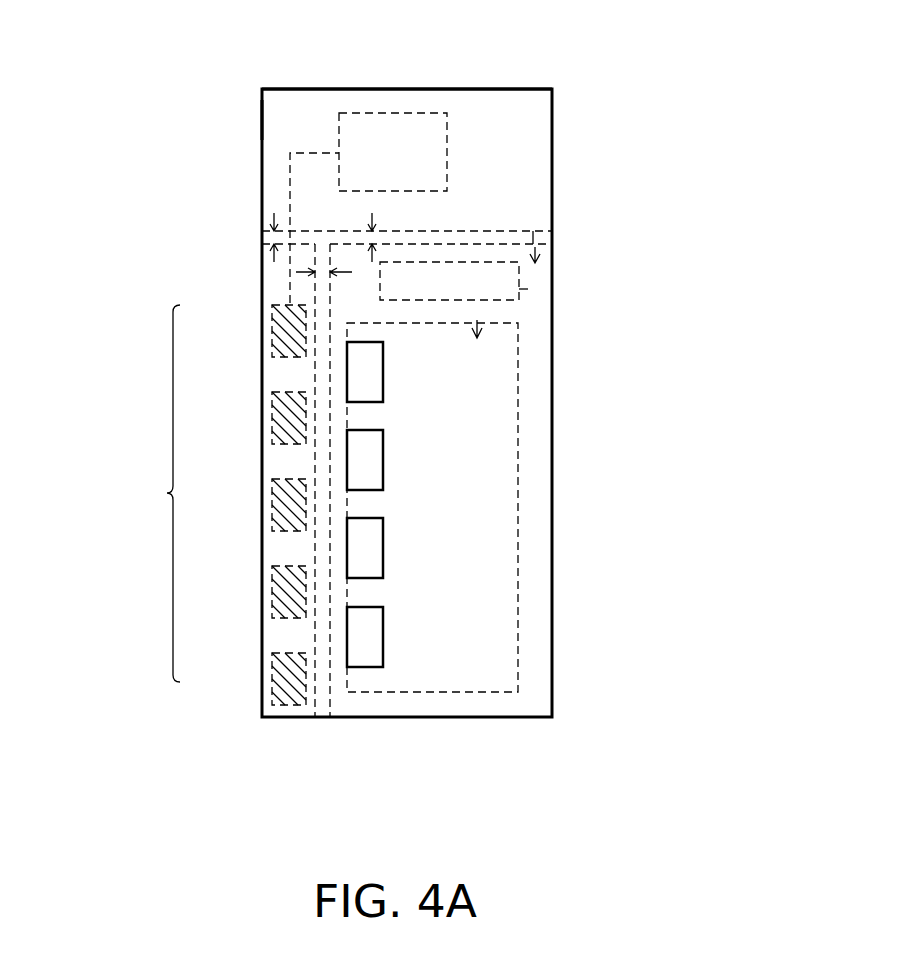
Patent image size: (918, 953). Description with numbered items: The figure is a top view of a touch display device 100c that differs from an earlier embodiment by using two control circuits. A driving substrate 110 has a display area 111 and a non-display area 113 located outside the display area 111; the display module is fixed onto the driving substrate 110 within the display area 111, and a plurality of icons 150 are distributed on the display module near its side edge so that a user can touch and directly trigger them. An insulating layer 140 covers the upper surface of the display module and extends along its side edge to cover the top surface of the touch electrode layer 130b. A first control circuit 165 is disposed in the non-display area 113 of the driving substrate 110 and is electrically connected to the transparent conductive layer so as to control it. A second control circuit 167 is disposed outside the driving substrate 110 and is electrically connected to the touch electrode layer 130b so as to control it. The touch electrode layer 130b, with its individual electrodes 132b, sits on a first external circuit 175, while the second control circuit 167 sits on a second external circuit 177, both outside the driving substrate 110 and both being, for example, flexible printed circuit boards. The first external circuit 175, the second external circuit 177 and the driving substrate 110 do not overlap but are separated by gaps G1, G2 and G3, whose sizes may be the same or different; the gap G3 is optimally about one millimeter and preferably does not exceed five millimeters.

The touch display device 100c is at (276, 766).
The driving substrate 110 is at (534, 707).
The display area 111 is at (477, 322).
The non-display area 113 is at (535, 231).
The touch electrode layer 130b is at (146, 493).
The conductive terminal 132b is at (268, 330).
The insulating layer 140 is at (512, 88).
The icons 150 is at (375, 370).
The first control circuit 165 is at (528, 289).
The second control circuit 167 is at (388, 133).
The first external circuit 175 is at (262, 273).
The second external circuit 177 is at (262, 122).
The gap G1 is at (270, 238).
The gap G2 is at (372, 238).
The gap G3 is at (323, 274).